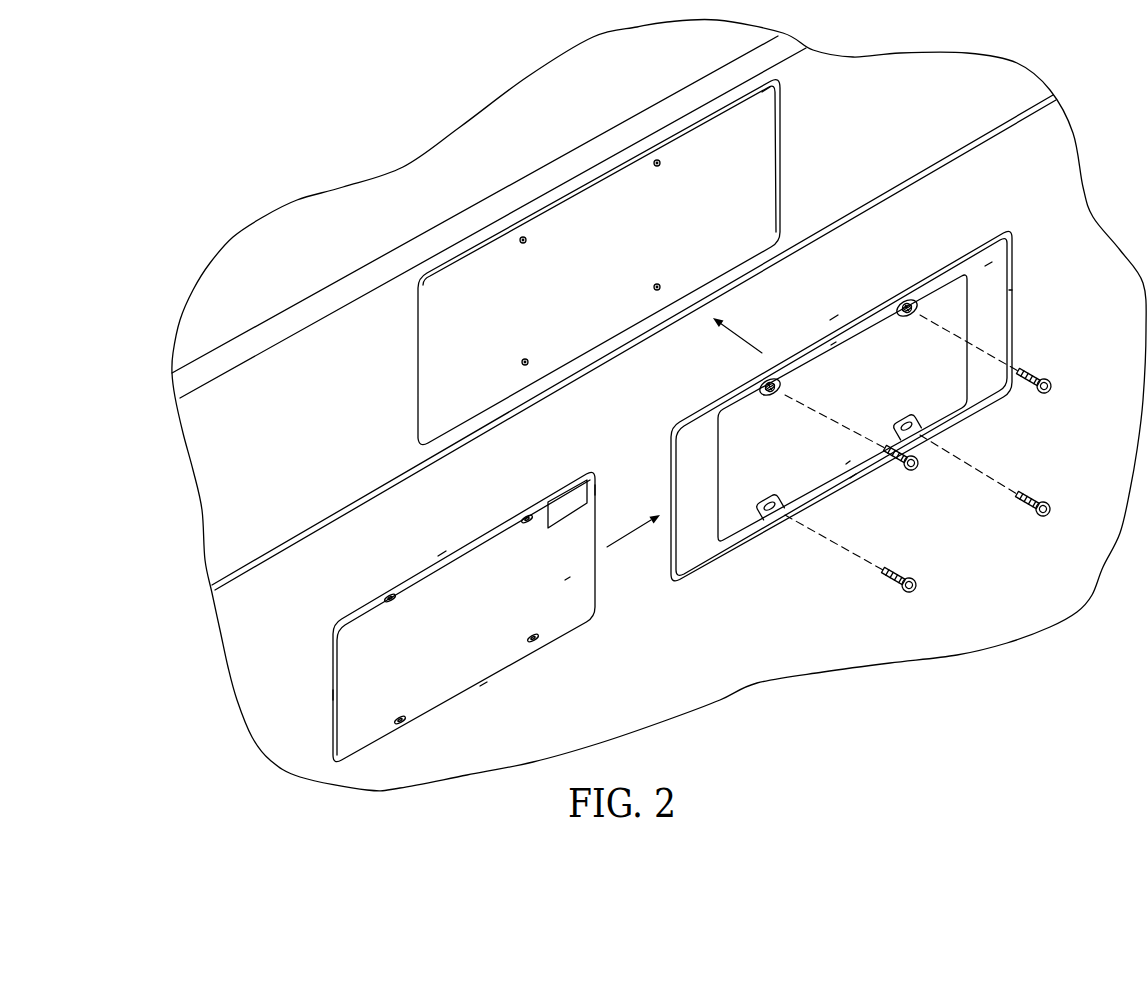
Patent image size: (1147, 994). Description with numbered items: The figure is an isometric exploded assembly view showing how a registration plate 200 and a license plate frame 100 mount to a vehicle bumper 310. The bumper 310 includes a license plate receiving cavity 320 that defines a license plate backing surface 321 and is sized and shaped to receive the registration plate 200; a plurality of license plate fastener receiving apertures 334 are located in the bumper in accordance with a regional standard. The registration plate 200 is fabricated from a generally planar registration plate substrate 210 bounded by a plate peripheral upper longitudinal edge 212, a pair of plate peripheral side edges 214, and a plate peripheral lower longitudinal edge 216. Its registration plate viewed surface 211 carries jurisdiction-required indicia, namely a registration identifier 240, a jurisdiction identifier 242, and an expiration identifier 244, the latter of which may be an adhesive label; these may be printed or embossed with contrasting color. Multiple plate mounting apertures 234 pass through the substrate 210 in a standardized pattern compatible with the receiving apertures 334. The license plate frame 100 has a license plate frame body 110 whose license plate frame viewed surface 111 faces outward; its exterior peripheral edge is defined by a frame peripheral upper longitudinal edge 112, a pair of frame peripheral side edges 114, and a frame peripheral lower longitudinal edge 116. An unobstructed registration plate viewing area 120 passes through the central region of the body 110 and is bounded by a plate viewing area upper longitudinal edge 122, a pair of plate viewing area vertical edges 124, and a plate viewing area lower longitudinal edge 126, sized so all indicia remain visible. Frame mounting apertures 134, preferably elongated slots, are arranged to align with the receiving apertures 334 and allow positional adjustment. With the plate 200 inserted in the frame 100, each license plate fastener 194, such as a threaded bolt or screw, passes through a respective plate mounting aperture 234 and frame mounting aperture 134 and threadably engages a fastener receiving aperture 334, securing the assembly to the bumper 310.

The license plate frame 100 is at (1024, 318).
The license plate frame body 110 is at (703, 574).
The license plate frame viewed surface 111 is at (996, 262).
The frame peripheral upper longitudinal edge 112 is at (834, 343).
The frame peripheral side edge 114 is at (1012, 294).
The frame peripheral lower longitudinal edge 116 is at (853, 474).
The unobstructed registration plate viewing area 120 is at (745, 458).
The plate viewing area upper longitudinal edge 122 is at (833, 346).
The plate viewing area vertical edge 124 is at (966, 353).
The plate viewing area lower longitudinal edge 126 is at (848, 462).
The frame mounting aperture 134 is at (913, 313).
The license plate fastener 194 is at (1040, 364).
The registration plate 200 is at (307, 640).
The registration plate substrate 210 is at (597, 618).
The registration plate viewed surface 211 is at (572, 572).
The plate peripheral upper longitudinal edge 212 is at (442, 552).
The plate peripheral side edge 214 is at (597, 488).
The plate peripheral lower longitudinal edge 216 is at (483, 684).
The plate mounting aperture 234 is at (521, 519).
The registration identifier 240 is at (393, 660).
The jurisdiction identifier 242 is at (488, 670).
The expiration identifier 244 is at (568, 494).
The vehicle bumper 310 is at (912, 118).
The license plate receiving cavity 320 is at (448, 348).
The license plate backing surface 321 is at (739, 186).
The license plate fastener receiving aperture 334 is at (522, 237).